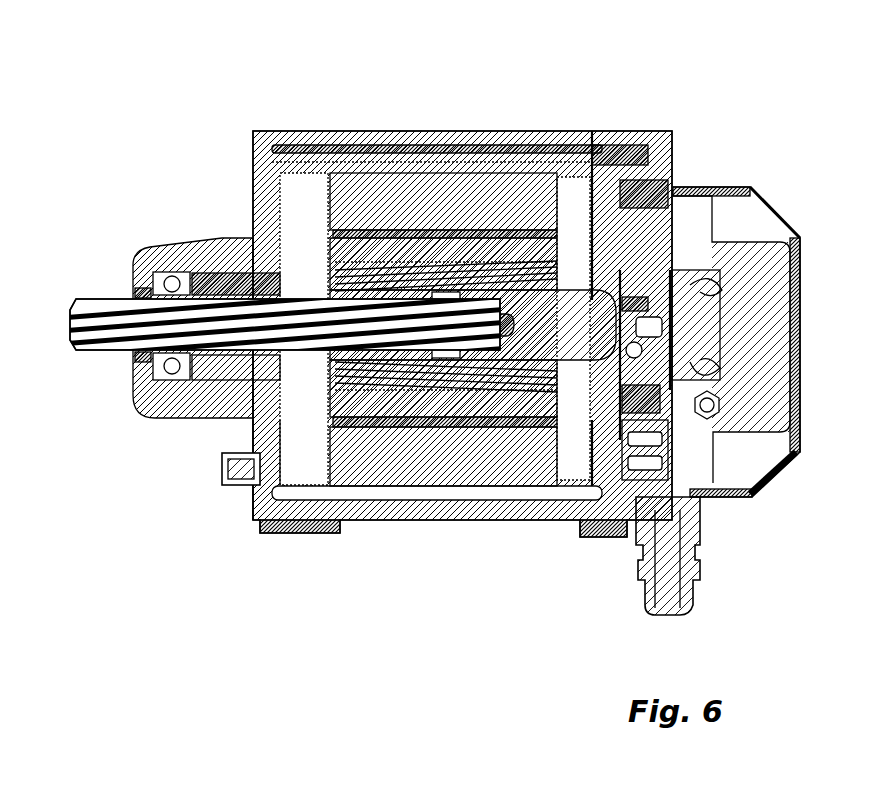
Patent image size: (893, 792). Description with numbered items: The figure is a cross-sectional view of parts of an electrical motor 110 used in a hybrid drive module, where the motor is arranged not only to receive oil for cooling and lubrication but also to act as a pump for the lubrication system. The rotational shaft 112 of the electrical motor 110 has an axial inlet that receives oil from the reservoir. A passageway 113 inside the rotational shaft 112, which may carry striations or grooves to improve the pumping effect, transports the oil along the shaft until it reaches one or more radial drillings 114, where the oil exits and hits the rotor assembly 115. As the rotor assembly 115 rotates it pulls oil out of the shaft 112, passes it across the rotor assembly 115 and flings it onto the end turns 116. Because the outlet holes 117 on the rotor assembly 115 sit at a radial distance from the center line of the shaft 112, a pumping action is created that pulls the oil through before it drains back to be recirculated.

The electrical motor 110 is at (413, 130).
The rotational shaft 112 is at (237, 355).
The passageway 113 is at (125, 330).
The radial drillings 114 is at (442, 348).
The rotor assembly 115 is at (377, 247).
The end turns 116 is at (300, 398).
The outlet holes 117 is at (243, 467).